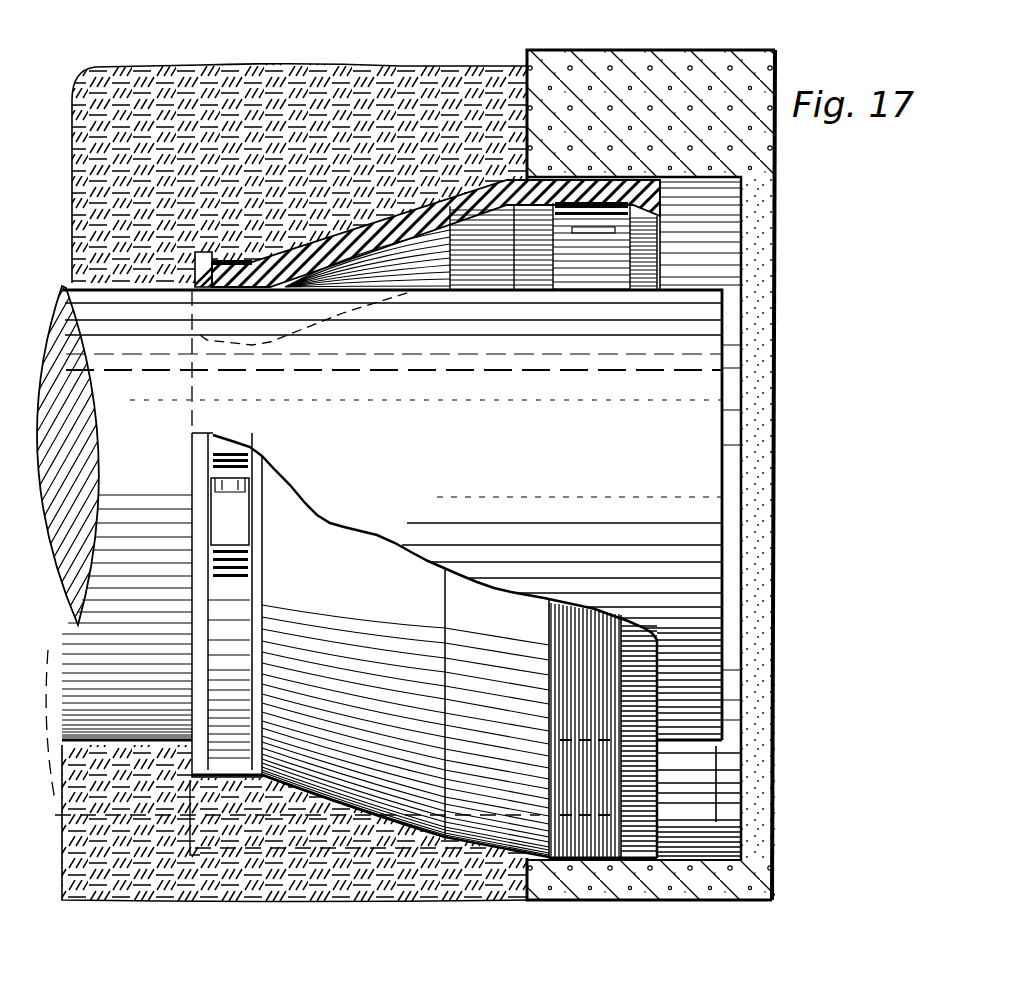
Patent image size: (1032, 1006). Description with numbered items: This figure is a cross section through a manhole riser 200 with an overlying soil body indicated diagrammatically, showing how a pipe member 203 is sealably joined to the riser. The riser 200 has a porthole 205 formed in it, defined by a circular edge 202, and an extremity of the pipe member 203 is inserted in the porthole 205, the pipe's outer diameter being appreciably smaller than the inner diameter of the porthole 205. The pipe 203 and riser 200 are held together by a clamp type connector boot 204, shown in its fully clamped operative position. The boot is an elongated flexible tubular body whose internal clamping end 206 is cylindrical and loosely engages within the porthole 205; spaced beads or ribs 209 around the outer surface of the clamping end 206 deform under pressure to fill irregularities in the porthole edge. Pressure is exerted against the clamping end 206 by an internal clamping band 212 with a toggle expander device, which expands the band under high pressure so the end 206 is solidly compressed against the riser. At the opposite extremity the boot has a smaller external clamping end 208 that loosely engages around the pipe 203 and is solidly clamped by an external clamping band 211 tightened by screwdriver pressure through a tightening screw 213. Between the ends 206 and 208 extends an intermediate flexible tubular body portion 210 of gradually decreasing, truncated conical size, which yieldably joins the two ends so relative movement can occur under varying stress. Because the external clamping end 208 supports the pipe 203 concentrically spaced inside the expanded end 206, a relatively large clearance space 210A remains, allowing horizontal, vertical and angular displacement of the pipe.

The manhole riser 200 is at (778, 73).
The circular edge 202 is at (778, 184).
The pipe member 203 is at (693, 450).
The clamp type connector boot 204 is at (444, 180).
The porthole 205 is at (729, 223).
The internal clamping end 206 is at (762, 197).
The external clamping end 208 is at (199, 252).
The beads or ribs 209 is at (584, 178).
The intermediate flexible tubular body portion 210 is at (315, 253).
The clearance space 210A is at (391, 280).
The external clamping band 211 is at (227, 633).
The internal clamping band 212 is at (635, 228).
The tightening screw 213 is at (250, 486).